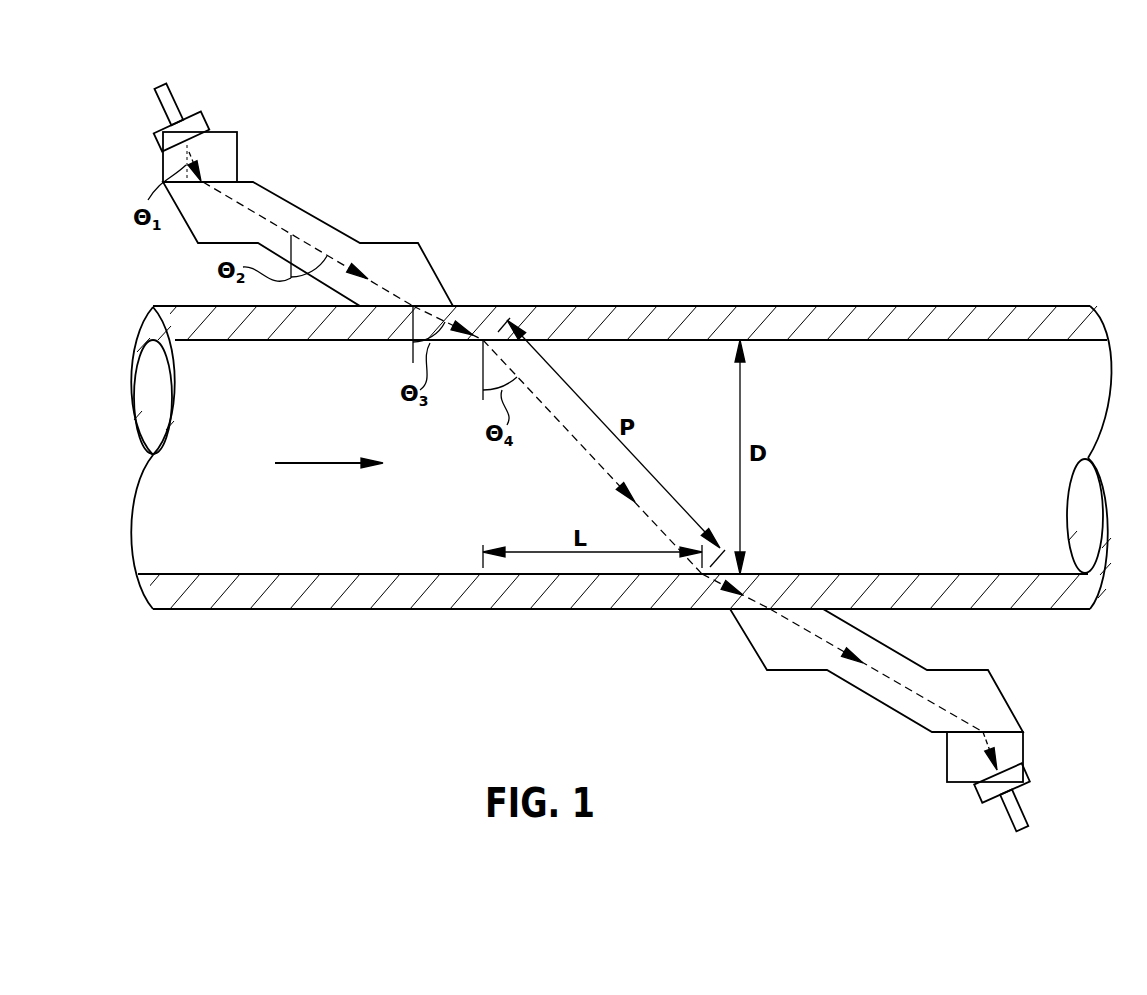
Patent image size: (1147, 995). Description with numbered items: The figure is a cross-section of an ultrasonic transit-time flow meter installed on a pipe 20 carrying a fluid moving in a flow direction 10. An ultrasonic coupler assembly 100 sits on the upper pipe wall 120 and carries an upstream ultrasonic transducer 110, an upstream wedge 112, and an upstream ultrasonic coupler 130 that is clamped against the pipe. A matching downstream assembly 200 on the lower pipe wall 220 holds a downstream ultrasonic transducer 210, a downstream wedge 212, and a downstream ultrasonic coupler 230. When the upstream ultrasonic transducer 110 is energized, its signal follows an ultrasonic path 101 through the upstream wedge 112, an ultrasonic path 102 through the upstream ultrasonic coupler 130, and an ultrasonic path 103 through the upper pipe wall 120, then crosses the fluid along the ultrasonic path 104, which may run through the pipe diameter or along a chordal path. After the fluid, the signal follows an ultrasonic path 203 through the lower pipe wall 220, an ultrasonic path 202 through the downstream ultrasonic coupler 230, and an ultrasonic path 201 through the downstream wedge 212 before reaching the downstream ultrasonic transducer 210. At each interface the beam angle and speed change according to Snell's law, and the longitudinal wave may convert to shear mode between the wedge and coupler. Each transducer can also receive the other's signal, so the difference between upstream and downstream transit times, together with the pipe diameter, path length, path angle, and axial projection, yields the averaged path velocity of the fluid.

The flow direction 10 is at (329, 452).
The pipe 20 is at (1040, 520).
The ultrasonic coupler assembly 100 is at (303, 167).
The ultrasonic path through upstream wedge 101 is at (189, 152).
The ultrasonic path through upstream ultrasonic coupler 102 is at (323, 250).
The ultrasonic path through upper pipe wall 103 is at (428, 312).
The ultrasonic path through fluid 104 is at (585, 448).
The upstream ultrasonic transducer 110 is at (173, 82).
The upstream wedge 112 is at (223, 132).
The upper pipe wall 120 is at (890, 325).
The upstream ultrasonic coupler 130 is at (293, 202).
The downstream ultrasonic coupler assembly 200 is at (884, 736).
The ultrasonic path through downstream wedge 201 is at (1010, 727).
The ultrasonic path through downstream ultrasonic coupler 202 is at (890, 673).
The ultrasonic path through lower pipe wall 203 is at (718, 578).
The downstream ultrasonic transducer 210 is at (1005, 818).
The downstream wedge 212 is at (945, 760).
The lower pipe wall 220 is at (1007, 592).
The downstream ultrasonic coupler 230 is at (868, 692).